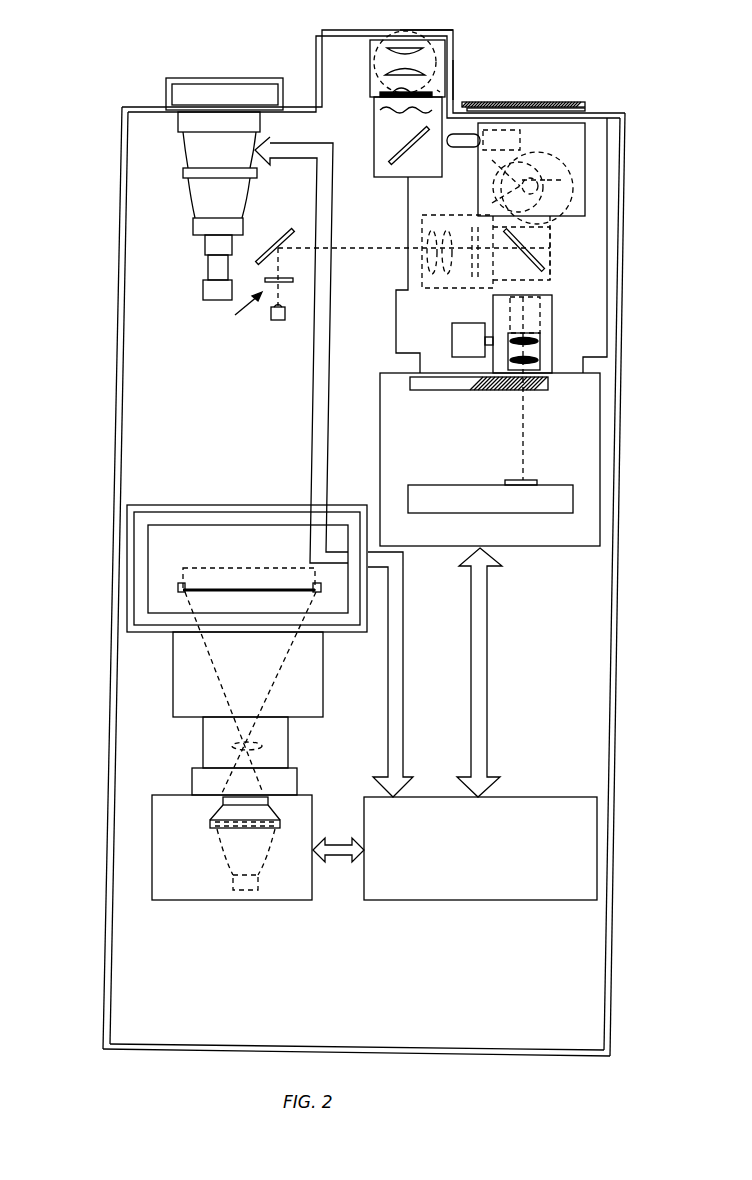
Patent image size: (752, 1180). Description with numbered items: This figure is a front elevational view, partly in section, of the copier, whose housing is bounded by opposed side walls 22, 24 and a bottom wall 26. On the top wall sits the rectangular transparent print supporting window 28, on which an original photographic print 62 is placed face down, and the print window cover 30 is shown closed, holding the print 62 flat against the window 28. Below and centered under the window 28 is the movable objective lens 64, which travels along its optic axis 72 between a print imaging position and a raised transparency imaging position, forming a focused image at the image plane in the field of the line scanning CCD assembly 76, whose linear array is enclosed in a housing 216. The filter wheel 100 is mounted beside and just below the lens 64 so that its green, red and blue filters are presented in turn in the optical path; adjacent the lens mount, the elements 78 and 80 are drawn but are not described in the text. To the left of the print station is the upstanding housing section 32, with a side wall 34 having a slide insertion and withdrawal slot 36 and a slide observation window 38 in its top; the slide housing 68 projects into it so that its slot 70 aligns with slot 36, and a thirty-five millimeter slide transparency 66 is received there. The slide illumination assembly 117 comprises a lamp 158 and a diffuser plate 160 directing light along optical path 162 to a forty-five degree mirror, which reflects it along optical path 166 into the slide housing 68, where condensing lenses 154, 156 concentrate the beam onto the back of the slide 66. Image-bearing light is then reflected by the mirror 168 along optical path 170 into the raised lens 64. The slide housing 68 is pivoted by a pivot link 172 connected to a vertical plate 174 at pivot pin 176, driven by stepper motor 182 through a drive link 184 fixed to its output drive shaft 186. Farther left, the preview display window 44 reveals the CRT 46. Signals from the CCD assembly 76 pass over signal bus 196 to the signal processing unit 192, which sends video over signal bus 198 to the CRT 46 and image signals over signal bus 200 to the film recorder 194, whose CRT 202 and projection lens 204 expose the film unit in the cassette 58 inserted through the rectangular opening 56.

The side wall 22 is at (612, 530).
The side wall 24 is at (107, 690).
The bottom wall 26 is at (185, 1050).
The print supporting window 28 is at (575, 142).
The print window cover 30 is at (550, 103).
The housing section 32 is at (322, 45).
The side wall 34 is at (453, 72).
The slide insertion and withdrawal slot 36 is at (453, 92).
The slide observation window 38 is at (423, 33).
The preview display window 44 is at (165, 90).
The CRT 46 is at (198, 143).
The rectangular opening 56 is at (165, 550).
The film holding and processing cassette 58 is at (207, 565).
The original photographic print 62 is at (585, 110).
The objective lens 64 is at (545, 310).
The slide transparency 66 is at (392, 93).
The slide housing 68 is at (373, 85).
The slot 70 is at (437, 90).
The optic axis 72 is at (538, 352).
The line scanning CCD assembly 76 is at (530, 481).
The hatched plate 78 is at (545, 375).
The box 80 is at (517, 338).
The filter wheel 100 is at (460, 385).
The slide illumination assembly 117 is at (236, 316).
The condensing lens 154 is at (392, 44).
The condensing lens 156 is at (392, 69).
The lamp 158 is at (285, 313).
The diffuser plate 160 is at (295, 280).
The optical path 162 is at (280, 262).
The optical path 166 is at (382, 247).
The mirror 168 is at (420, 143).
The optical path 170 is at (523, 292).
The pivot link 172 is at (462, 150).
The vertical plate 174 is at (585, 205).
The pivot pin 176 is at (528, 135).
The stepper motor 182 is at (563, 180).
The drive link 184 is at (280, 243).
The output drive shaft 186 is at (480, 203).
The signal processing unit 192 is at (552, 805).
The electronic imaging film recorder 194 is at (212, 893).
The signal bus 196 is at (483, 702).
The signal bus 198 is at (400, 648).
The signal bus 200 is at (340, 842).
The CRT 202 is at (219, 858).
The projection lens 204 is at (240, 748).
The housing 216 is at (452, 488).